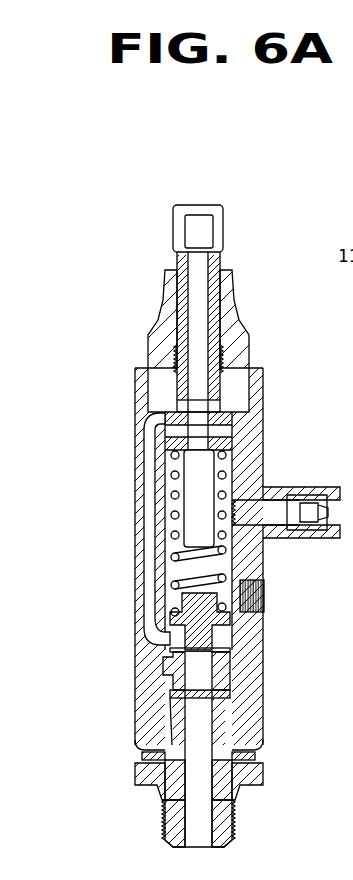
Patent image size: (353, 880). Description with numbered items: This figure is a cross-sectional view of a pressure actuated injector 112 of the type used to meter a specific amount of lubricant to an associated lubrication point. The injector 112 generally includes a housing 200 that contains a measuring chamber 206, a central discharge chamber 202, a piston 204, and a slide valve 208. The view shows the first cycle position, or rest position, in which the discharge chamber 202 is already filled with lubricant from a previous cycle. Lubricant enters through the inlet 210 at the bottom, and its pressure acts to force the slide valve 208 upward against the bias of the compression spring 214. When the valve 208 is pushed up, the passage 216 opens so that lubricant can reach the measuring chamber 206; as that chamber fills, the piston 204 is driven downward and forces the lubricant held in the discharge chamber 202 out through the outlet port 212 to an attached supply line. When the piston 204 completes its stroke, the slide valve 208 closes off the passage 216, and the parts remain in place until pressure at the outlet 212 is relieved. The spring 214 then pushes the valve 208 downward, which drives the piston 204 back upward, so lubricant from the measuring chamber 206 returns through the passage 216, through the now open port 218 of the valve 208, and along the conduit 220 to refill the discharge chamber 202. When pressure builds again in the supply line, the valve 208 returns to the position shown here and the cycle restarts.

The injector 112 is at (64, 300).
The housing 200 is at (140, 397).
The central discharge chamber 202 is at (167, 488).
The piston 204 is at (212, 462).
The measuring chamber 206 is at (217, 393).
The slide valve 208 is at (212, 672).
The inlet 210 is at (224, 823).
The outlet port 212 is at (257, 593).
The spring 214 is at (226, 552).
The passage 216 is at (160, 668).
The port 218 is at (187, 653).
The conduit 220 is at (182, 615).